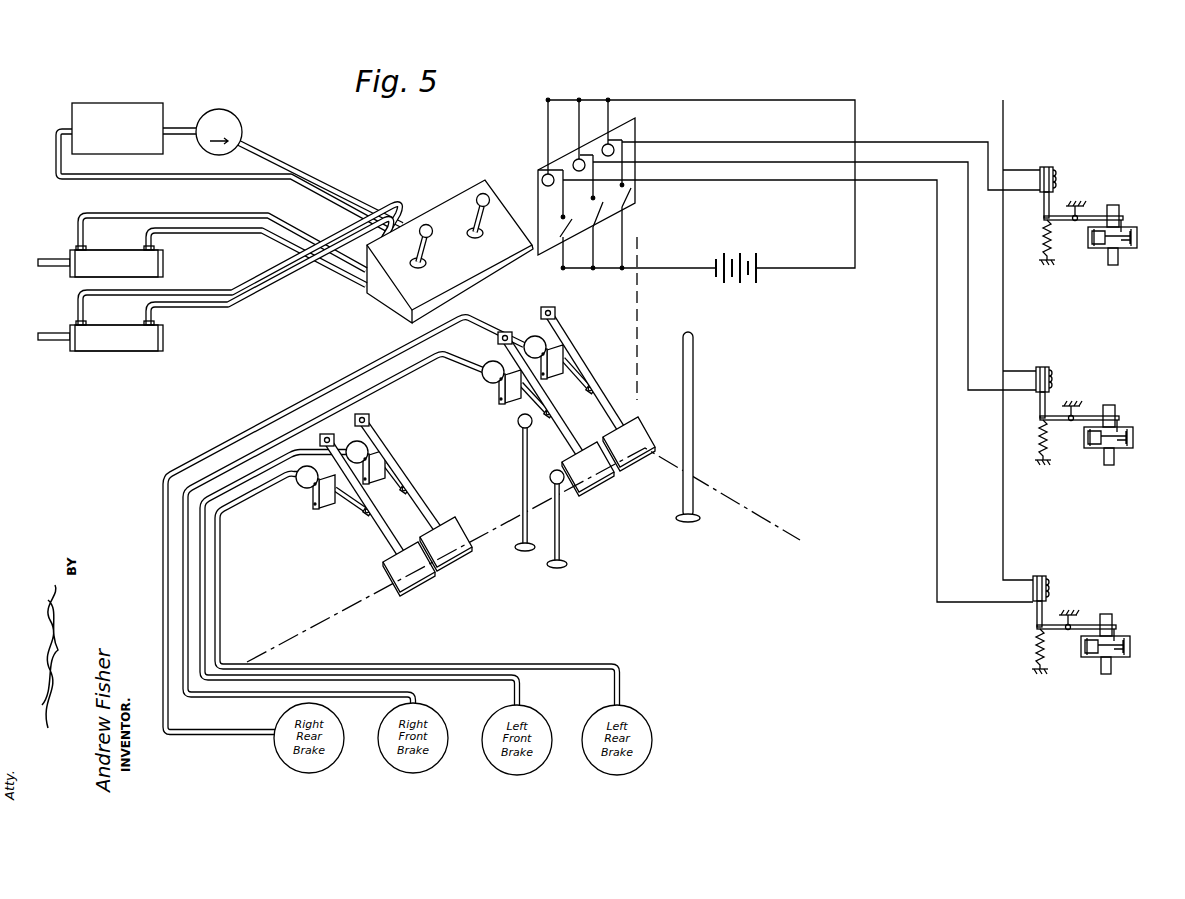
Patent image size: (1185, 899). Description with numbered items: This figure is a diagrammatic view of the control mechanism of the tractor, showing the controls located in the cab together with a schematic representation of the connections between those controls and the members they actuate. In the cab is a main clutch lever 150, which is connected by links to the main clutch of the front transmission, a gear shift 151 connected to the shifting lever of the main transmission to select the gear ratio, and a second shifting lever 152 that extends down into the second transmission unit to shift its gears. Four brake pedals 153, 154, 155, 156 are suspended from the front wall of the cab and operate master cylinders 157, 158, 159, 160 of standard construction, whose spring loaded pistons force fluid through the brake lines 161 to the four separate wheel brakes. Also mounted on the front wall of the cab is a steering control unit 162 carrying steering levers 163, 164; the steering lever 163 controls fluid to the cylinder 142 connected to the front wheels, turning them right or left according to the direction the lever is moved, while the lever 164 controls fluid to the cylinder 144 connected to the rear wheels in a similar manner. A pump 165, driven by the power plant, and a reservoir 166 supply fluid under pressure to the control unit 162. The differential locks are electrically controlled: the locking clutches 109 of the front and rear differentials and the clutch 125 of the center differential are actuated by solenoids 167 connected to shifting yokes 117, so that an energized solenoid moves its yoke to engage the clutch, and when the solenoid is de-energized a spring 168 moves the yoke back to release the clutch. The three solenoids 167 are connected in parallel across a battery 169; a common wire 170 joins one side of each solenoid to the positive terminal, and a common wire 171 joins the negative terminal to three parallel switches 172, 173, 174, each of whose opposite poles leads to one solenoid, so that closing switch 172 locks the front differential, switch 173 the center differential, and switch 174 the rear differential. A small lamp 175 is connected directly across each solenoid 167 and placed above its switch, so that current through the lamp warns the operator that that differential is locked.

The clutch 109 is at (1125, 230).
The shifting yoke 117 is at (1098, 214).
The clutch 125 is at (1122, 430).
The cylinder 142 is at (109, 258).
The cylinder 144 is at (108, 332).
The main clutch lever 150 is at (694, 465).
The gear shift 151 is at (521, 490).
The second shifting lever 152 is at (561, 522).
The brake pedal 153 is at (418, 590).
The brake pedal 154 is at (453, 568).
The brake pedal 155 is at (590, 482).
The brake pedal 156 is at (640, 458).
The master cylinder 157 is at (303, 490).
The master cylinder 158 is at (364, 444).
The master cylinder 159 is at (483, 382).
The master cylinder 160 is at (536, 336).
The brake lines 161 is at (165, 622).
The steering control unit 162 is at (380, 297).
The steering lever 163 is at (412, 254).
The steering lever 164 is at (473, 224).
The pump 165 is at (232, 116).
The reservoir 166 is at (126, 113).
The solenoid 167 is at (1052, 174).
The spring 168 is at (1040, 242).
The battery 169 is at (740, 290).
The common wire 170 is at (855, 262).
The common wire 171 is at (670, 272).
The switch 172 is at (573, 224).
The switch 173 is at (603, 208).
The switch 174 is at (632, 193).
The lamp 175 is at (603, 143).